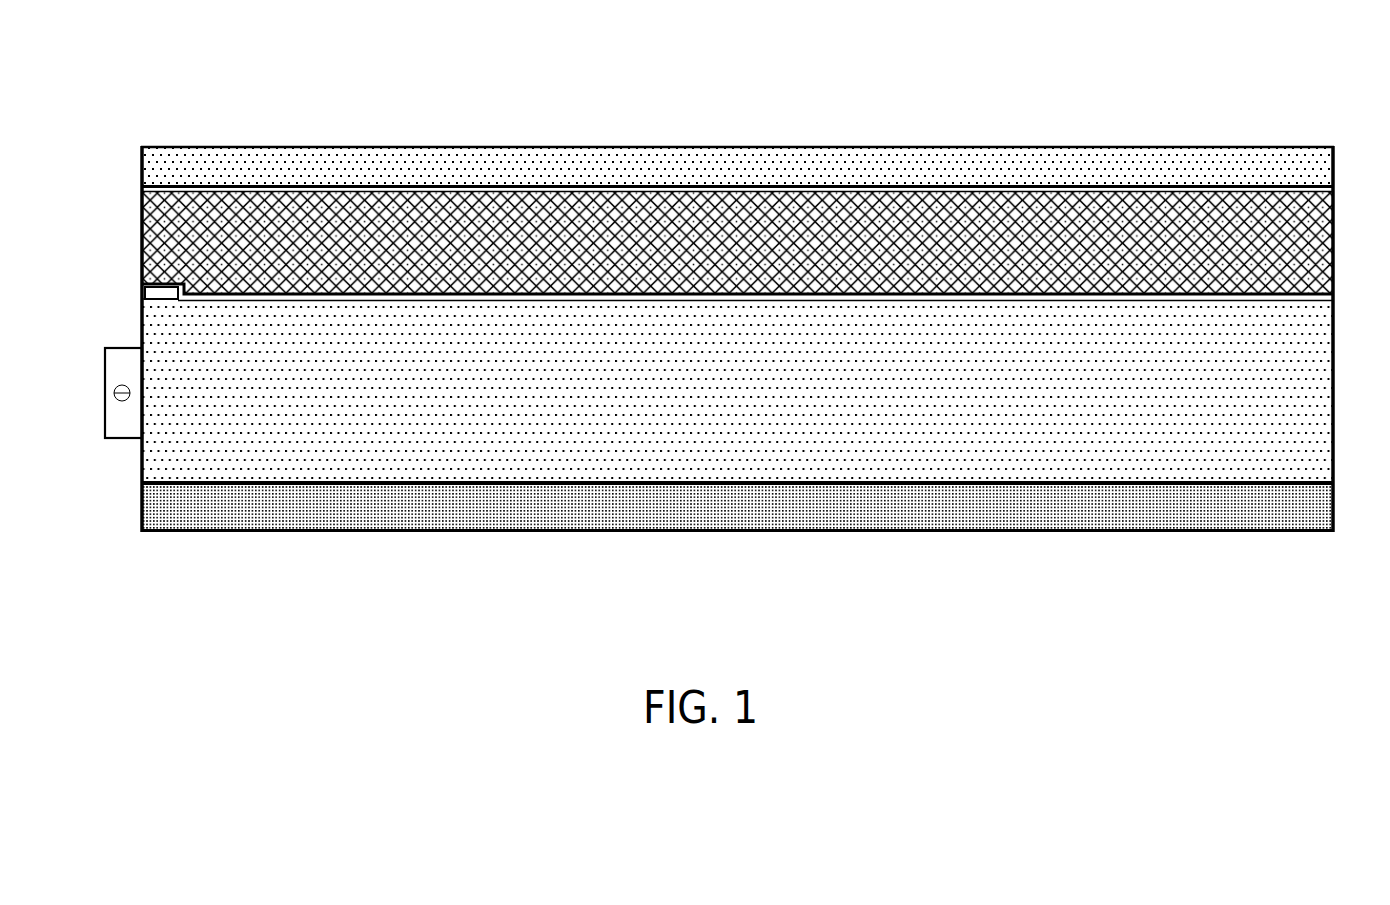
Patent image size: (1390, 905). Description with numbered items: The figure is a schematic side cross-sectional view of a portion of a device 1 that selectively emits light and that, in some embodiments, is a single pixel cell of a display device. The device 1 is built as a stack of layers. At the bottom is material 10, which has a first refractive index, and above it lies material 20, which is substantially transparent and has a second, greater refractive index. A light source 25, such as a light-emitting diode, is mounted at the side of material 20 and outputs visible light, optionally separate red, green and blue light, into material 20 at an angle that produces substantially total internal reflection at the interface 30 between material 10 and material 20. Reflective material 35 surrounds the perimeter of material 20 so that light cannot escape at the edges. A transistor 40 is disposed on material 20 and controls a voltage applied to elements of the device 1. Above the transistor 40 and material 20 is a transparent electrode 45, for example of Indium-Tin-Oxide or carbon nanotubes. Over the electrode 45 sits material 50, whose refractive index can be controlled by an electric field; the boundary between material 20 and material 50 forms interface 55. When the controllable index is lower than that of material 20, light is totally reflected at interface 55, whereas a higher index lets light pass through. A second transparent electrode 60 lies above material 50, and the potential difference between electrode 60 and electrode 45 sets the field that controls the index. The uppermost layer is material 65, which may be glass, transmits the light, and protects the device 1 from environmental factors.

The device 1 is at (344, 106).
The material 10 is at (1320, 508).
The material 20 is at (1320, 435).
The light source 25 is at (105, 389).
The interface 30 is at (1333, 482).
The reflective material 35 is at (140, 453).
The transistor 40 is at (141, 297).
The electrode 45 is at (142, 287).
The material 50 is at (1323, 242).
The interface 55 is at (1333, 293).
The electrode 60 is at (142, 189).
The material 65 is at (1320, 169).